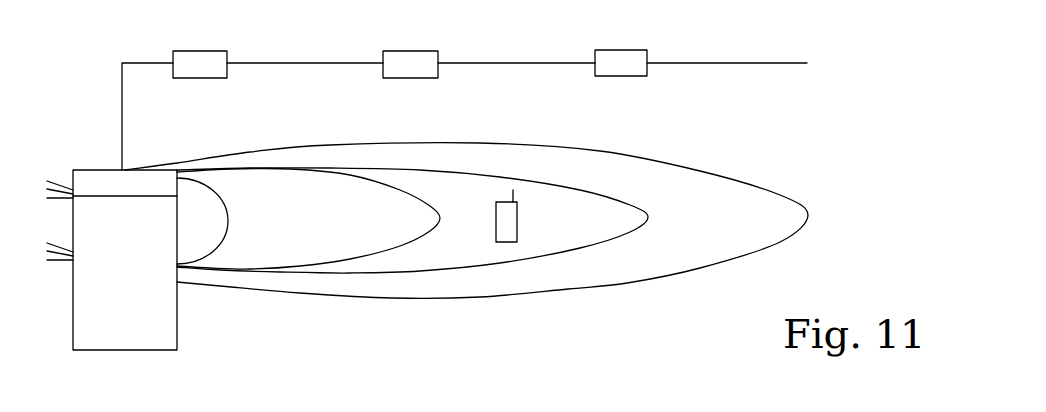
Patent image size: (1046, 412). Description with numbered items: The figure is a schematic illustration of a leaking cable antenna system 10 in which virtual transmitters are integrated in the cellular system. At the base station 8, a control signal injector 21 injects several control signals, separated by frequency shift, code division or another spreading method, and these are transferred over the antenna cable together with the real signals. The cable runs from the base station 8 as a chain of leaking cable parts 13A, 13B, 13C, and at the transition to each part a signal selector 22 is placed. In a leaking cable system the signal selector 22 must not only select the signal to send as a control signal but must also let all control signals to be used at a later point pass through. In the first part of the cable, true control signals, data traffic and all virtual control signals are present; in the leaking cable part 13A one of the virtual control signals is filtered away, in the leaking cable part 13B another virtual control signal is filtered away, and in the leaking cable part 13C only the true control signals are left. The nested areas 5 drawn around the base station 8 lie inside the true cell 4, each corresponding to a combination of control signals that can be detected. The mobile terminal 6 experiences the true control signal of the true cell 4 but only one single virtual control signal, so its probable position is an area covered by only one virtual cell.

The radio communication system 10 is at (782, 132).
The leaking cable part 13A is at (353, 63).
The leaking cable part 13B is at (563, 63).
The leaking cable part 13C is at (777, 62).
The signal selector 22 is at (220, 70).
The control signal injector 21 is at (150, 175).
The base station 8 is at (165, 327).
The cell coverage area 5 is at (212, 217).
The true cell 4 is at (627, 283).
The mobile terminal 6 is at (503, 222).